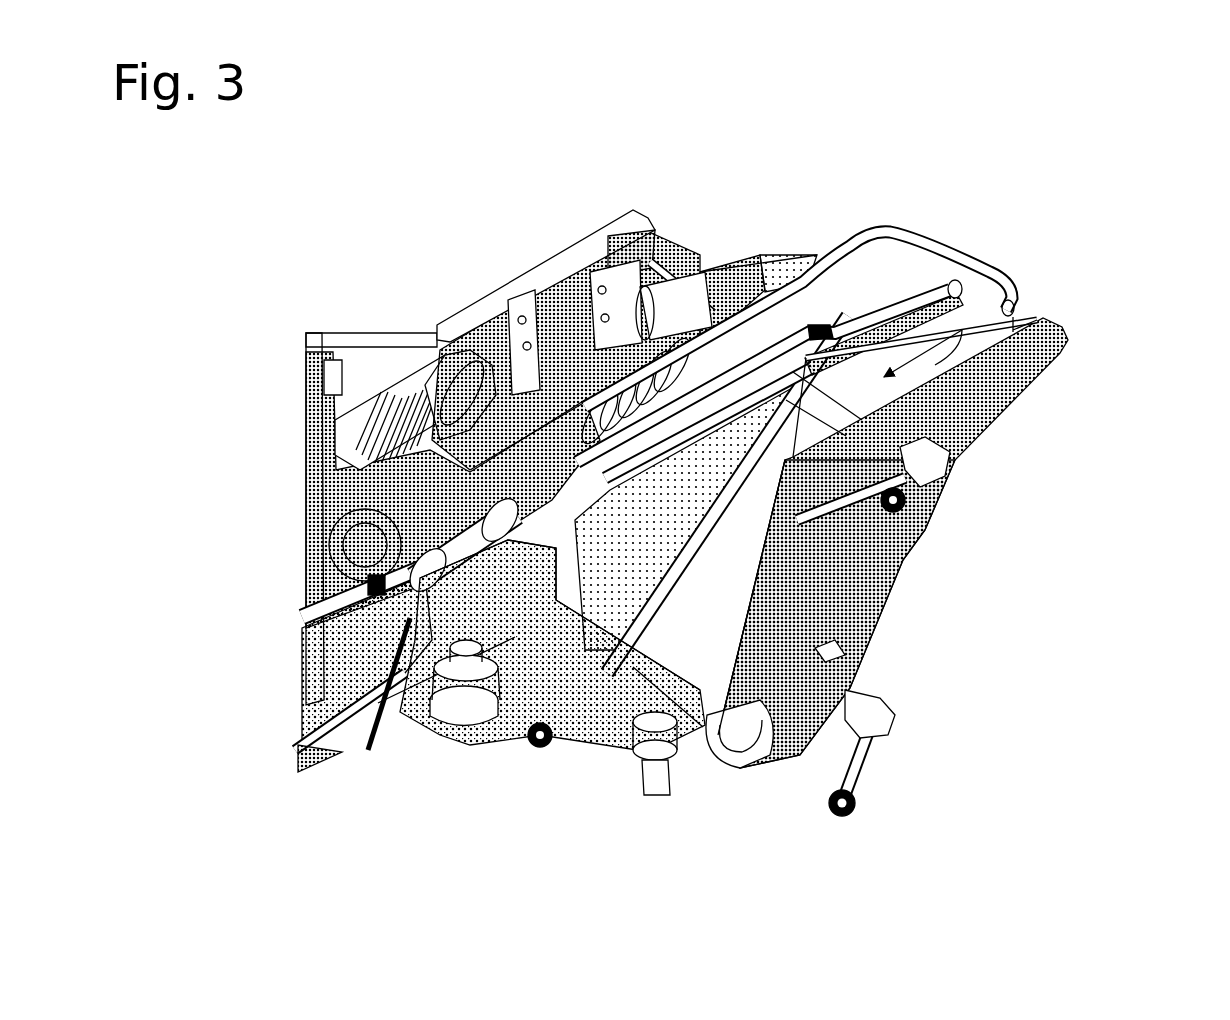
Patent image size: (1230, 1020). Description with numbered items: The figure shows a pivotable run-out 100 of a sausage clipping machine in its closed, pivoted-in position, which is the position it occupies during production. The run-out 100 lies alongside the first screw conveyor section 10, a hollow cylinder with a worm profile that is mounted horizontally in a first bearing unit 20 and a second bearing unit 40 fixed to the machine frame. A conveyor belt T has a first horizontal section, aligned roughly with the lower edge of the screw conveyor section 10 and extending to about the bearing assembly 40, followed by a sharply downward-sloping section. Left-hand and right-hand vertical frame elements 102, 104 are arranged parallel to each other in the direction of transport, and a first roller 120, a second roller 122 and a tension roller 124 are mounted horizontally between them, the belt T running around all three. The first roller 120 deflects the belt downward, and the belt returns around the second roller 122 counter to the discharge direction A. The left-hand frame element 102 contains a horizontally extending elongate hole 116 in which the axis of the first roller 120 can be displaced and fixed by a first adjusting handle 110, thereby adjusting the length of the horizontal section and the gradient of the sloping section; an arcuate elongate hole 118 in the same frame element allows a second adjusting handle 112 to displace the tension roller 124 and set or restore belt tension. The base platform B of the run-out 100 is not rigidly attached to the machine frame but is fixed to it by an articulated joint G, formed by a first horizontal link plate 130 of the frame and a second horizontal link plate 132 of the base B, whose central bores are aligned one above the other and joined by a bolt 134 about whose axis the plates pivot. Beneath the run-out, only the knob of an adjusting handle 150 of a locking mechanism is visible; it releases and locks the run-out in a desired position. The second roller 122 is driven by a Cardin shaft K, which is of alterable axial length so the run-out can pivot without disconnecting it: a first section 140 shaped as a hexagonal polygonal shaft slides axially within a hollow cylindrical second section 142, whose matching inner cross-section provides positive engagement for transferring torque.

The first screw conveyor section 10 is at (723, 290).
The first bearing unit 20 is at (358, 338).
The second bearing unit 40 is at (538, 222).
The run-out 100 is at (1094, 628).
The left-hand frame element 102 is at (1012, 412).
The right-hand frame element 104 is at (912, 318).
The first adjusting handle 110 is at (953, 470).
The second adjusting handle 112 is at (893, 720).
The elongate hole 116 is at (903, 565).
The arcuate elongate hole 118 is at (878, 643).
The first roller 120 is at (840, 405).
The second roller 122 is at (688, 715).
The tension roller 124 is at (1013, 318).
The first horizontal link plate 130 is at (458, 660).
The second horizontal link plate 132 is at (466, 720).
The bolt 134 is at (435, 620).
The first section 140 is at (530, 622).
The second section 142 is at (525, 569).
The adjusting handle 150 is at (548, 742).
The discharge direction A is at (1013, 310).
The base platform B is at (619, 820).
The articulated joint G is at (432, 758).
The Cardin shaft K is at (385, 722).
The conveyor belt T is at (950, 320).